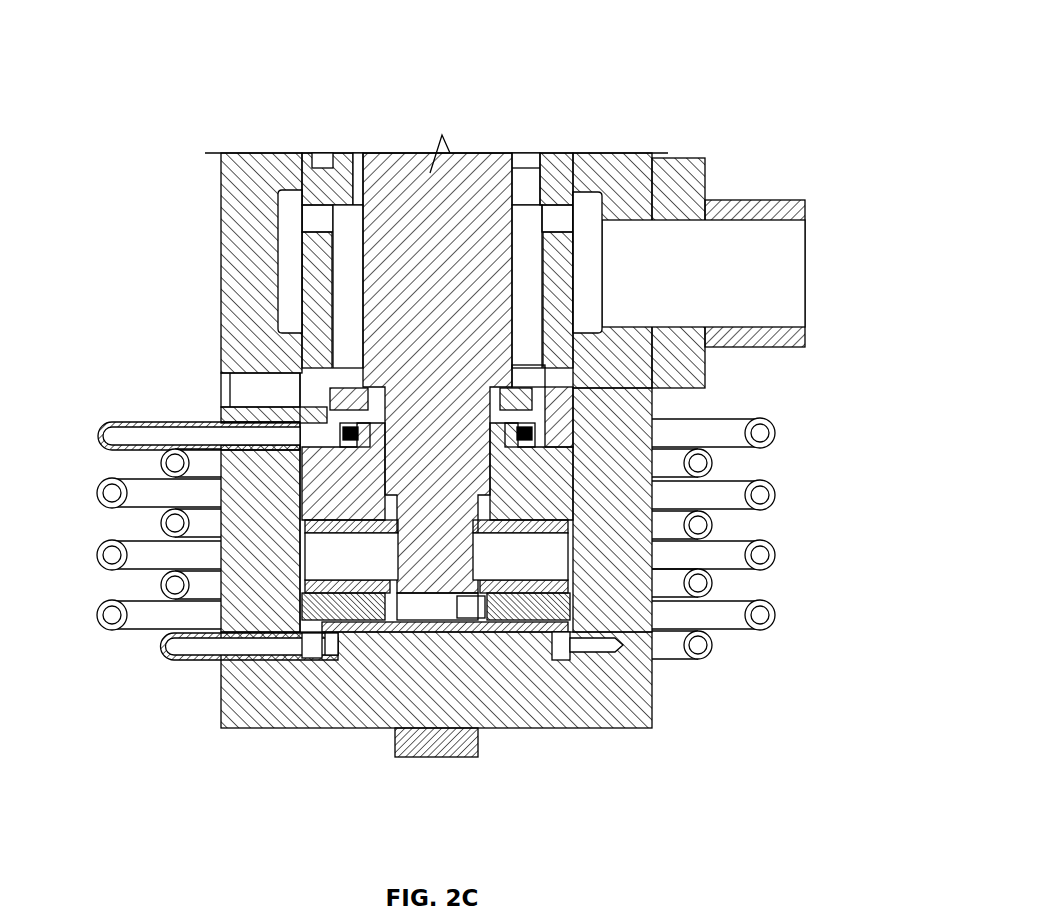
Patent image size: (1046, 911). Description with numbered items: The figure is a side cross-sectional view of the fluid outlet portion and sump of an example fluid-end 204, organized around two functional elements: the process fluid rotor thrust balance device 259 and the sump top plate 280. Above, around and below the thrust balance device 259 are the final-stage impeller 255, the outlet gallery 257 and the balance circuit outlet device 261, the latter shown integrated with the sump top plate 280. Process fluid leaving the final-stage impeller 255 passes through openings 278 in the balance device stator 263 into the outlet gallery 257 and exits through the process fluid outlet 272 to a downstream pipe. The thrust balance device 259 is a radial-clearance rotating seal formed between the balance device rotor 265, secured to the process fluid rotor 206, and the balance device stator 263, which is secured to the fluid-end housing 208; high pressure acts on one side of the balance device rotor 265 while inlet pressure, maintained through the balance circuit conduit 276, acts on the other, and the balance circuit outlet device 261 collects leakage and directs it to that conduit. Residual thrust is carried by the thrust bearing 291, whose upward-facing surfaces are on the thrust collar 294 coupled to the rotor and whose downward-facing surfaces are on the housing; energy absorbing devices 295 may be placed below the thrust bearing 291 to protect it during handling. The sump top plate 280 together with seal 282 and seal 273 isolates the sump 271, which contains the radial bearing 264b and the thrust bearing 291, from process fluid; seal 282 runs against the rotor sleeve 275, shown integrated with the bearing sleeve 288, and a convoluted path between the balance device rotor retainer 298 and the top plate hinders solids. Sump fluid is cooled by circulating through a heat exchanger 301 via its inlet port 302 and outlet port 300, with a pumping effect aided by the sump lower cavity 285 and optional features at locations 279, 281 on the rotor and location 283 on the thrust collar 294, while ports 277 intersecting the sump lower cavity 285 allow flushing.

The fluid-end 204 is at (569, 42).
The process fluid rotor 206 is at (490, 163).
The fluid-end housing 208 is at (670, 407).
The final-stage impeller 255 is at (532, 183).
The outlet gallery 257 is at (525, 373).
The thrust balance device 259 is at (578, 247).
The balance circuit outlet device 261 is at (555, 382).
The balance device stator 263 is at (308, 258).
The radial bearing 264b is at (315, 392).
The balance device rotor 265 is at (347, 305).
The sump 271 is at (640, 435).
The process fluid outlet 272 is at (713, 240).
The seal 273 is at (338, 414).
The rotor sleeve 275 is at (586, 268).
The balance circuit conduit 276 is at (233, 388).
The ports 277 is at (615, 648).
The openings 278 is at (563, 216).
The location 279 is at (493, 507).
The sump top plate 280 is at (528, 413).
The location 281 is at (458, 595).
The seal 282 is at (543, 395).
The location 283 is at (300, 573).
The sump lower cavity 285 is at (555, 640).
The bearing sleeve 288 is at (378, 472).
The thrust bearing 291 is at (290, 542).
The thrust collar 294 is at (545, 547).
The energy absorbing devices 295 is at (357, 612).
The balance device rotor retainer 298 is at (542, 372).
The heat exchanger outlet port 300 is at (250, 652).
The heat exchanger 301 is at (103, 423).
The heat exchanger inlet port 302 is at (298, 418).